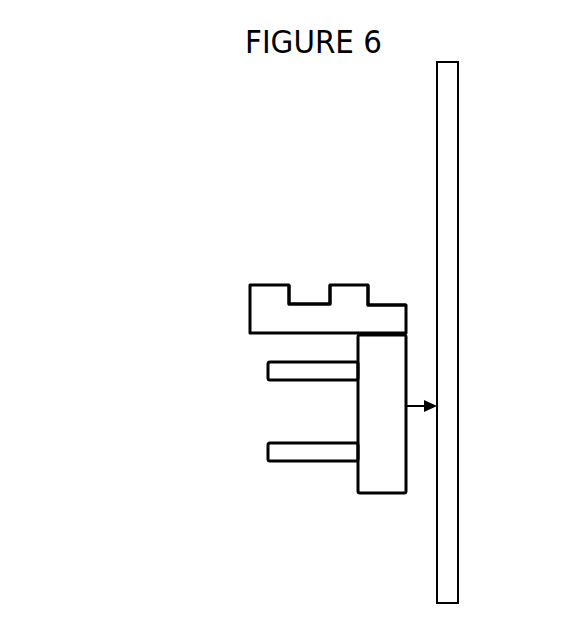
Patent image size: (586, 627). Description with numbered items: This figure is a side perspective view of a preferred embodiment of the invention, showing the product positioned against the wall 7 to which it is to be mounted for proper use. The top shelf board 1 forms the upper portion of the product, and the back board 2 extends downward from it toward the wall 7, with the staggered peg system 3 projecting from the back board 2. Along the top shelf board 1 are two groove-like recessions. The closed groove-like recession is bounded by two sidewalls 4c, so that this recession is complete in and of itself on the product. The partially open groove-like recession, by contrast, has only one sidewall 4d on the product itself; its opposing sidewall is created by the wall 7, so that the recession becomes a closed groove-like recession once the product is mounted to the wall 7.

The top shelf board 1 is at (250, 317).
The back board 2 is at (388, 447).
The staggered peg system 3 is at (280, 447).
The sidewalls of the closed groove-like recession 4c is at (328, 291).
The sidewall of the partially open groove-like recession 4d is at (437, 290).
The wall 7 is at (458, 343).